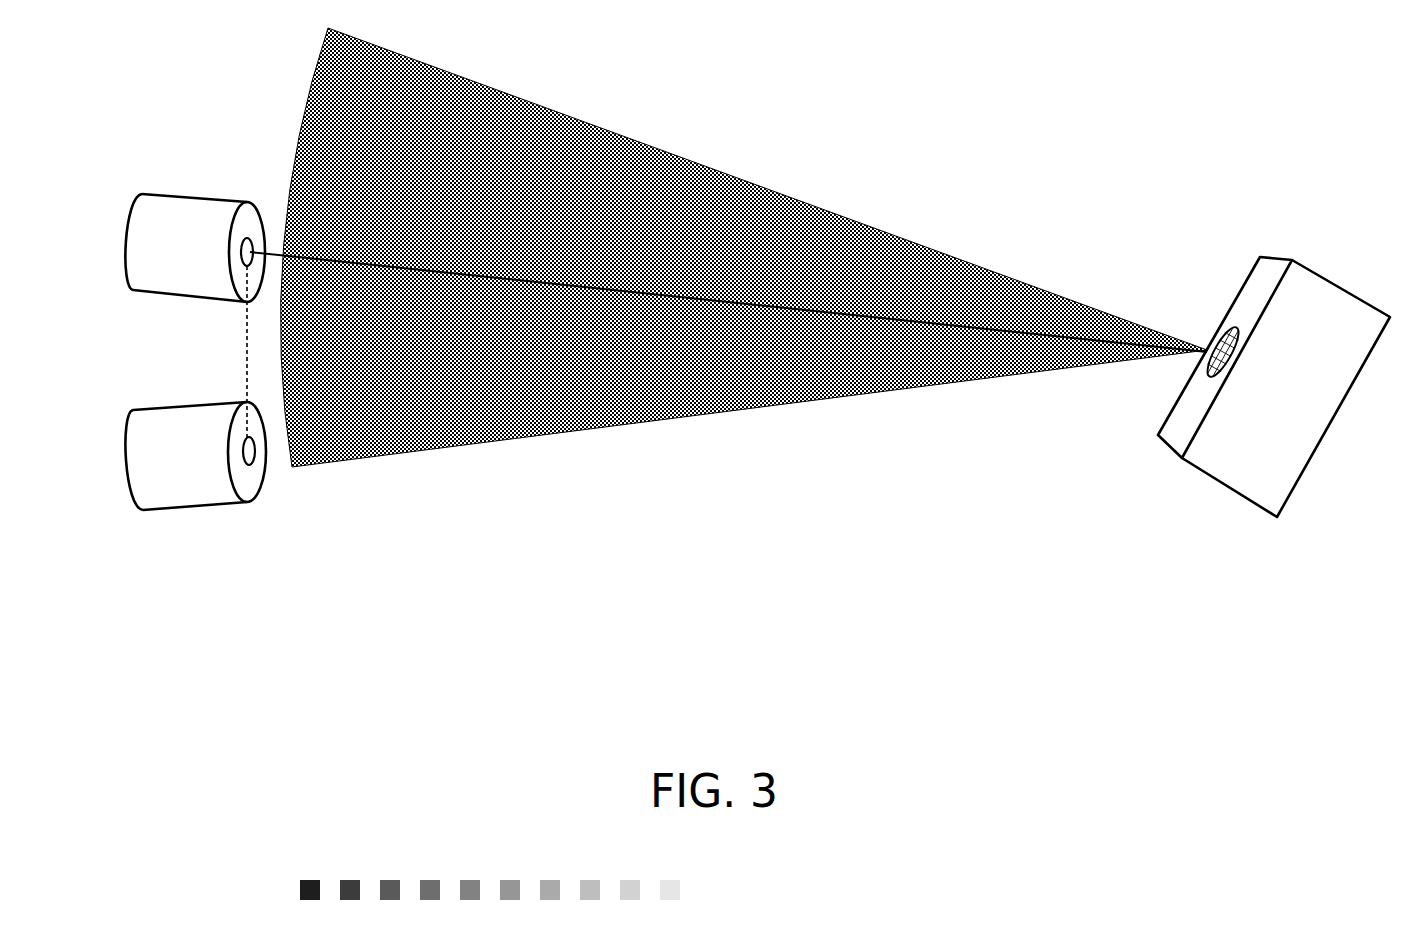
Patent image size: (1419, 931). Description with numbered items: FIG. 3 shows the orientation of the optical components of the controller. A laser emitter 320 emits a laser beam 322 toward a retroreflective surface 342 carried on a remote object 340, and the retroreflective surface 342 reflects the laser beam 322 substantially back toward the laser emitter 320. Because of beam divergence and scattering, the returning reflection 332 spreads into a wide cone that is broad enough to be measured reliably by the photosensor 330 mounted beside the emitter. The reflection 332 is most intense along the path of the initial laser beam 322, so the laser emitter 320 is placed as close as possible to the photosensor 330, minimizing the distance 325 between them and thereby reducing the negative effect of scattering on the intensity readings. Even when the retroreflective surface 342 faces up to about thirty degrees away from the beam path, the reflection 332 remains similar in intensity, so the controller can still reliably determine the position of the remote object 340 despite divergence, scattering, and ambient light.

The laser emitter 320 is at (192, 194).
The laser beam 322 is at (433, 240).
The distance 325 is at (247, 342).
The photosensor 330 is at (177, 480).
The reflection 332 is at (423, 433).
The remote object 340 is at (1326, 280).
The retroreflective surface 342 is at (1222, 338).